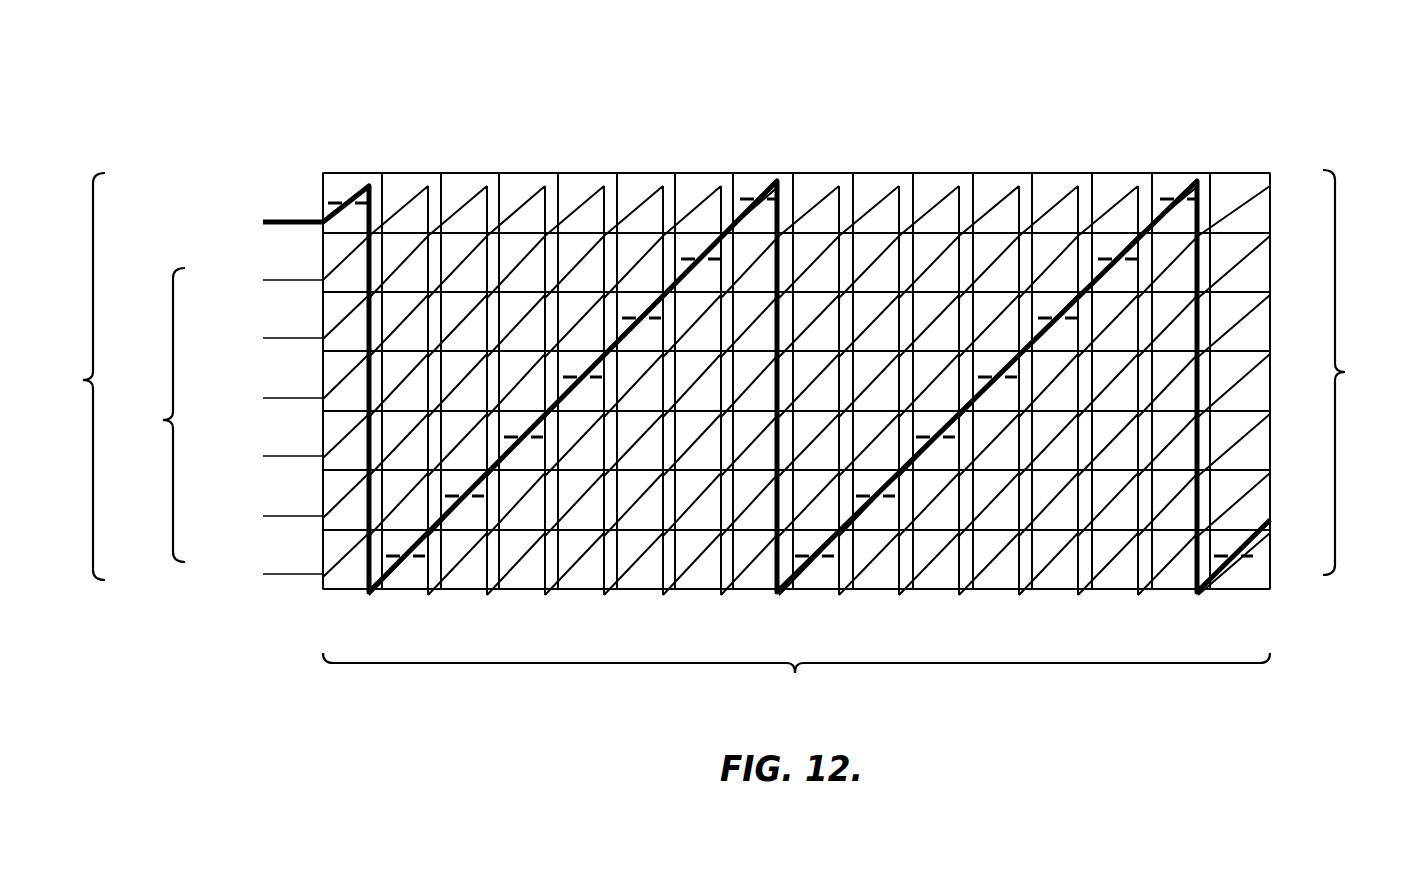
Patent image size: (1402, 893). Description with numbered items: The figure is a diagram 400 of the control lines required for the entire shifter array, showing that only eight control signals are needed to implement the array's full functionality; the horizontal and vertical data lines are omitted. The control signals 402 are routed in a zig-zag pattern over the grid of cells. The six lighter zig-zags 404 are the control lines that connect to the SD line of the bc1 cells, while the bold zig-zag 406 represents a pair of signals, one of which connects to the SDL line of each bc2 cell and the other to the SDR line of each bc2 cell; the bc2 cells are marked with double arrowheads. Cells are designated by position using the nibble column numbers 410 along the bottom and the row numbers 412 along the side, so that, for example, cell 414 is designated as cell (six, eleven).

The sawtooth waveform diagram 400 is at (1238, 86).
The control signals 402 is at (72, 376).
The lighter zig-zags 404 is at (219, 427).
The bold zig-zag 406 is at (273, 221).
The nibble column numbers 410 is at (741, 663).
The row numbers 412 is at (1340, 372).
The cell 414 is at (571, 186).